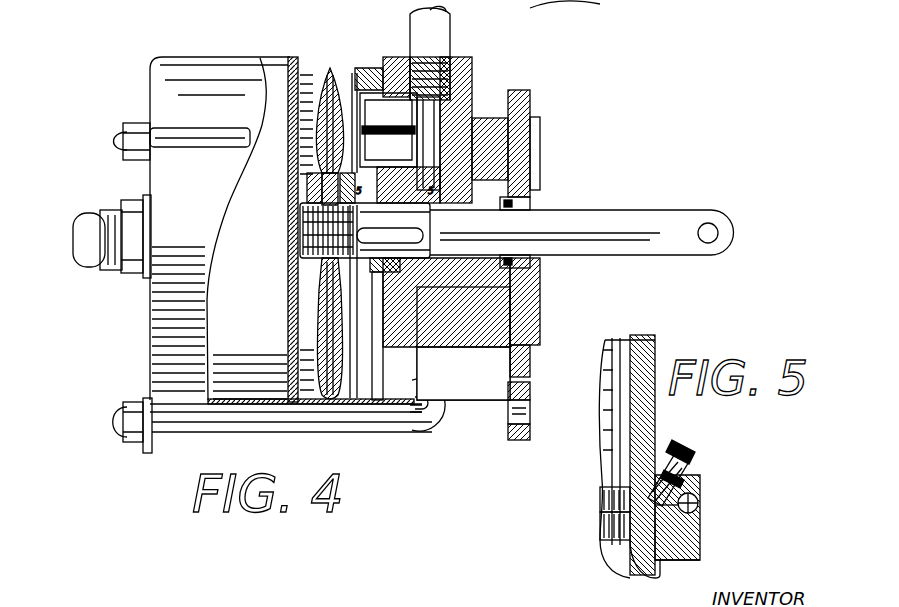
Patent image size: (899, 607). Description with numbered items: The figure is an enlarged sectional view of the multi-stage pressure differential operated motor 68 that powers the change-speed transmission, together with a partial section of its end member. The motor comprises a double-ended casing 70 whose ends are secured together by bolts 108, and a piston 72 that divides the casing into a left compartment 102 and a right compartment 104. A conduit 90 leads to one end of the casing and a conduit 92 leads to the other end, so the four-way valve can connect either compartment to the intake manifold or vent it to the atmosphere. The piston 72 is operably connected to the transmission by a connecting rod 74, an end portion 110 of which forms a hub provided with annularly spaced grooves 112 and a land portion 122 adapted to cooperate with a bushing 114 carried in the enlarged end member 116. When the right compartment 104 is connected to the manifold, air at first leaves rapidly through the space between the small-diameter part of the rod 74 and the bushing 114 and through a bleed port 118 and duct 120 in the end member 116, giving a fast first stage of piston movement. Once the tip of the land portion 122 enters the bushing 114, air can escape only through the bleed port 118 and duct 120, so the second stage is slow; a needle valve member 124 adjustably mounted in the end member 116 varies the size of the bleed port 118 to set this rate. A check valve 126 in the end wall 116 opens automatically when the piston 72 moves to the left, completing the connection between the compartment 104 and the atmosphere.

In FIG. 4, the pressure differential operated motor 68 is at (246, 57).
In FIG. 4, the casing 70 is at (232, 402).
In FIG. 4, the piston 72 is at (320, 318).
In FIG. 4, the connecting rod 74 is at (622, 215).
In FIG. 4, the conduit 90 is at (103, 258).
In FIG. 4, the conduit 92 is at (452, 27).
In FIG. 4, the left compartment 102 is at (262, 395).
In FIG. 4, the right compartment 104 is at (378, 380).
In FIG. 4, the bolts 108 is at (196, 145).
In FIG. 4, the end portion of rod 110 is at (306, 248).
In FIG. 5, the end portion of rod 110 is at (600, 522).
In FIG. 4, the annularly spaced grooves 112 is at (306, 213).
In FIG. 5, the annularly spaced grooves 112 is at (600, 509).
In FIG. 4, the bushing 114 is at (430, 335).
In FIG. 4, the end member 116 is at (520, 132).
In FIG. 5, the end member 116 is at (644, 410).
In FIG. 4, the bleed port 118 is at (418, 162).
In FIG. 5, the bleed port 118 is at (668, 543).
In FIG. 4, the duct 120 is at (430, 108).
In FIG. 4, the land portion 122 is at (440, 226).
In FIG. 5, the needle valve member 124 is at (690, 461).
In FIG. 4, the check valve 126 is at (398, 100).